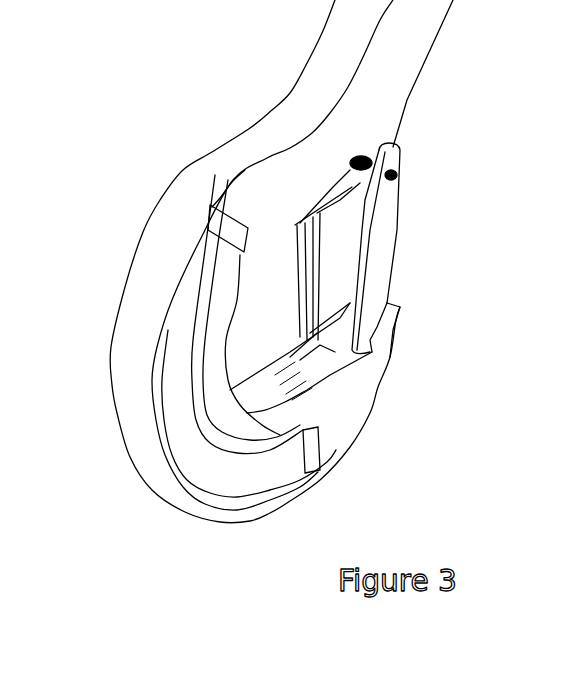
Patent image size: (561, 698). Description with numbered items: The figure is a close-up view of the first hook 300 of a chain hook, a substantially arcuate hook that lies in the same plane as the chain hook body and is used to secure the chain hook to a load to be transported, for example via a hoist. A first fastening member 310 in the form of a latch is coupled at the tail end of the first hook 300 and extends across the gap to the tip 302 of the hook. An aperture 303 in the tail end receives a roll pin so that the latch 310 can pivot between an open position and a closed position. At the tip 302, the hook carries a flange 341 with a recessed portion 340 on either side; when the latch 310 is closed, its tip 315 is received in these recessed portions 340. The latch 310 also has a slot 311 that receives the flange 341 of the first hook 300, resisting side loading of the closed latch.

The first hook 300 is at (98, 278).
The tip 302 is at (402, 308).
The aperture 303 is at (350, 158).
The first fastening member 310 is at (402, 203).
The slot 311 is at (340, 297).
The tip 315 is at (330, 323).
The recessed portion 340 is at (352, 368).
The flange 341 is at (315, 352).